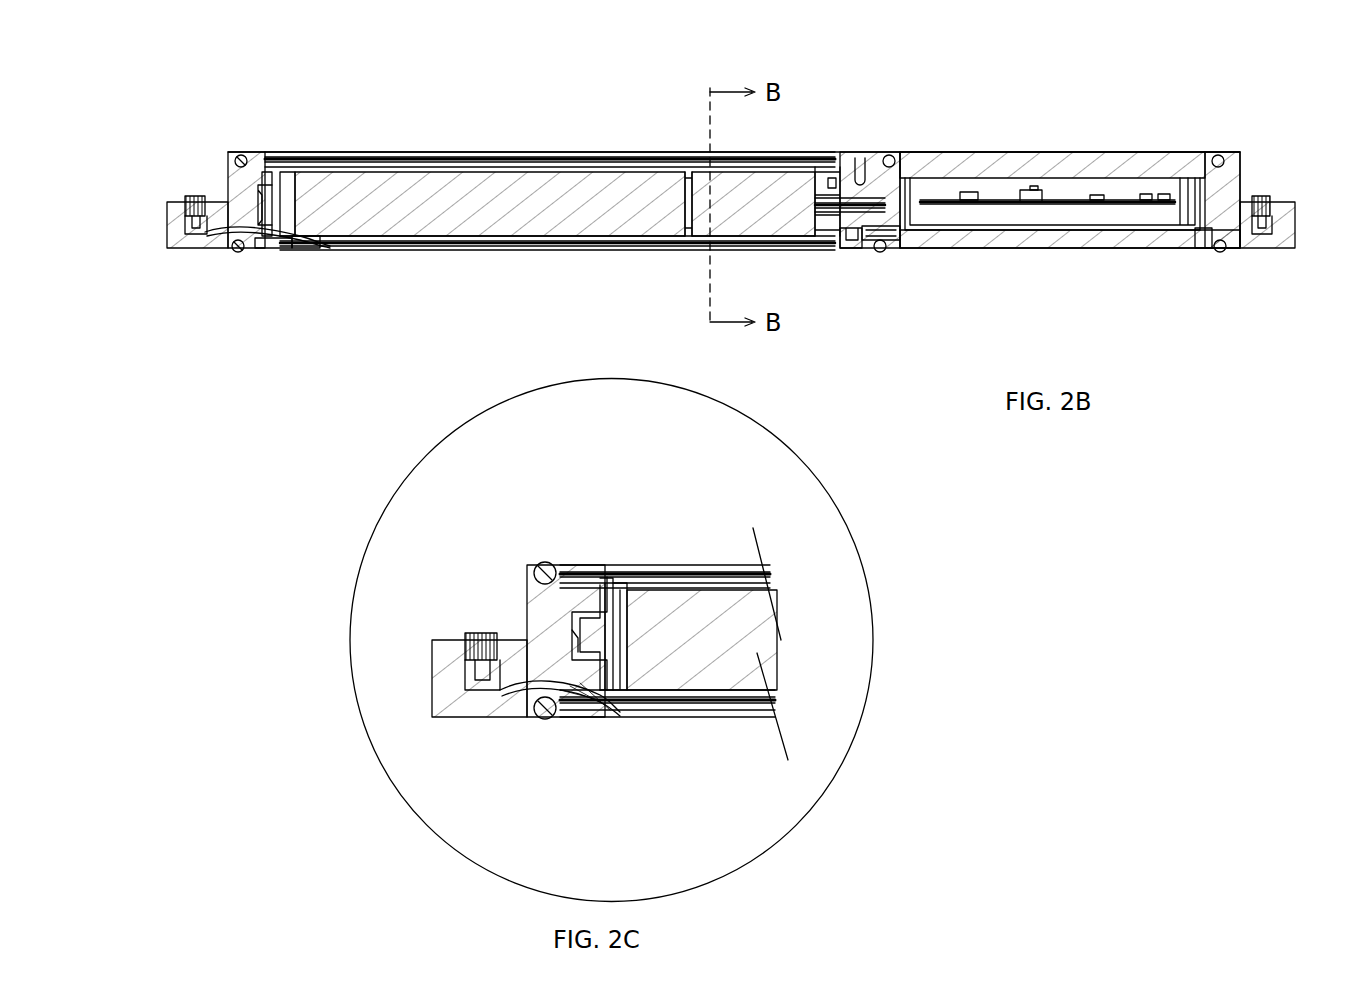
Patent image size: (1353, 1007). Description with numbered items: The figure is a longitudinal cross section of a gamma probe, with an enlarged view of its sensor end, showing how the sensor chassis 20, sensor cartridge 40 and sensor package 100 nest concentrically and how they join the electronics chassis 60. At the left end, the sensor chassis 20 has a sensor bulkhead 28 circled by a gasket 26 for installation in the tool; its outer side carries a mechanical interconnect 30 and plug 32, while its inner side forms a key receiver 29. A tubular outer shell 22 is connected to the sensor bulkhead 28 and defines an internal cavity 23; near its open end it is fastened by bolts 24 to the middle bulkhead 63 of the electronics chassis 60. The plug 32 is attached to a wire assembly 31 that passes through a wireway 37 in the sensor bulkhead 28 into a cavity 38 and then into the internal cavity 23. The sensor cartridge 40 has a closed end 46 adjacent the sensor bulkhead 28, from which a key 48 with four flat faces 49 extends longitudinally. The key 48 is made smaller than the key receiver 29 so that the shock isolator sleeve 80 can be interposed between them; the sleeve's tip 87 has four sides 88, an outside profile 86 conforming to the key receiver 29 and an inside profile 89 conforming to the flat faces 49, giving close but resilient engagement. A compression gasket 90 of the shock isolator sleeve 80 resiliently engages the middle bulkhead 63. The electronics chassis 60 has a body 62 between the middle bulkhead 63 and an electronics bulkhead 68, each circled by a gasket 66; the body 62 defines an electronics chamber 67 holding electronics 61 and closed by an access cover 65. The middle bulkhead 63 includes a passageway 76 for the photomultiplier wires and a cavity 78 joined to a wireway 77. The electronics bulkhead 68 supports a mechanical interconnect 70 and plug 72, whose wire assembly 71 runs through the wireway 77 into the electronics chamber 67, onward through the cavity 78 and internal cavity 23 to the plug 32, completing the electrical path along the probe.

In FIG. 2B, the sensor chassis 20 is at (335, 128).
In FIG. 2B, the outer shell 22 is at (425, 152).
In FIG. 2B, the internal cavity 23 is at (398, 246).
In FIG. 2B, the bolts 24 is at (858, 160).
In FIG. 2B, the gasket 26 is at (232, 172).
In FIG. 2B, the sensor bulkhead 28 is at (238, 180).
In FIG. 2B, the key receiver 29 is at (262, 172).
In FIG. 2C, the key receiver 29 is at (603, 630).
In FIG. 2B, the mechanical interconnect 30 is at (176, 250).
In FIG. 2B, the wire assembly 31 is at (238, 252).
In FIG. 2B, the plug 32 is at (190, 250).
In FIG. 2B, the wireway 37 is at (264, 248).
In FIG. 2B, the cavity 38 is at (308, 247).
In FIG. 2B, the sensor cartridge 40 is at (634, 260).
In FIG. 2B, the closed end 46 is at (345, 160).
In FIG. 2C, the closed end 46 is at (588, 718).
In FIG. 2C, the key 48 is at (636, 586).
In FIG. 2C, the flat faces 49 is at (625, 692).
In FIG. 2B, the electronics chassis 60 is at (1032, 130).
In FIG. 2B, the electronics 61 is at (1092, 168).
In FIG. 2B, the body 62 is at (1040, 250).
In FIG. 2B, the middle bulkhead 63 is at (848, 165).
In FIG. 2B, the access cover 65 is at (1066, 160).
In FIG. 2B, the gasket 66 is at (1216, 160).
In FIG. 2B, the electronics chamber 67 is at (992, 232).
In FIG. 2B, the electronics bulkhead 68 is at (1240, 165).
In FIG. 2B, the mechanical interconnect 70 is at (1280, 250).
In FIG. 2B, the wire assembly 71 is at (1220, 252).
In FIG. 2B, the plug 72 is at (1262, 200).
In FIG. 2B, the passageway 76 is at (922, 168).
In FIG. 2B, the wireway 77 is at (1200, 238).
In FIG. 2B, the cavity 78 is at (845, 250).
In FIG. 2B, the shock isolator sleeve 80 is at (602, 262).
In FIG. 2C, the outside profile 86 is at (535, 640).
In FIG. 2B, the tip 87 is at (268, 160).
In FIG. 2C, the tip 87 is at (580, 625).
In FIG. 2C, the sides 88 is at (588, 612).
In FIG. 2C, the inside profile 89 is at (575, 640).
In FIG. 2B, the compression gasket 90 is at (830, 240).
In FIG. 2B, the sensor package 100 is at (593, 170).